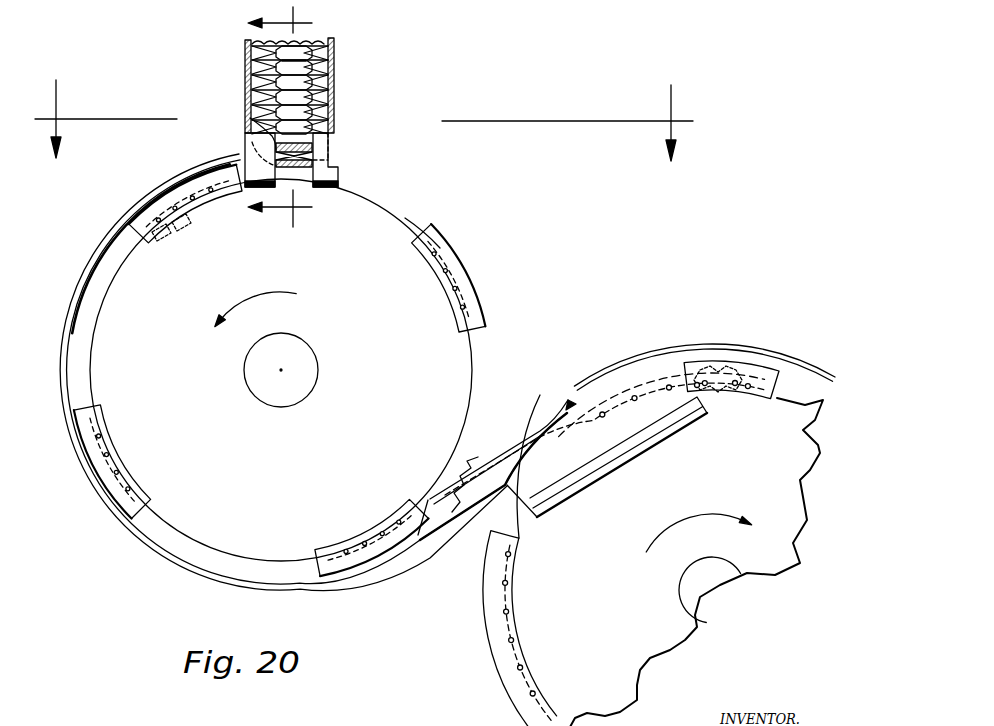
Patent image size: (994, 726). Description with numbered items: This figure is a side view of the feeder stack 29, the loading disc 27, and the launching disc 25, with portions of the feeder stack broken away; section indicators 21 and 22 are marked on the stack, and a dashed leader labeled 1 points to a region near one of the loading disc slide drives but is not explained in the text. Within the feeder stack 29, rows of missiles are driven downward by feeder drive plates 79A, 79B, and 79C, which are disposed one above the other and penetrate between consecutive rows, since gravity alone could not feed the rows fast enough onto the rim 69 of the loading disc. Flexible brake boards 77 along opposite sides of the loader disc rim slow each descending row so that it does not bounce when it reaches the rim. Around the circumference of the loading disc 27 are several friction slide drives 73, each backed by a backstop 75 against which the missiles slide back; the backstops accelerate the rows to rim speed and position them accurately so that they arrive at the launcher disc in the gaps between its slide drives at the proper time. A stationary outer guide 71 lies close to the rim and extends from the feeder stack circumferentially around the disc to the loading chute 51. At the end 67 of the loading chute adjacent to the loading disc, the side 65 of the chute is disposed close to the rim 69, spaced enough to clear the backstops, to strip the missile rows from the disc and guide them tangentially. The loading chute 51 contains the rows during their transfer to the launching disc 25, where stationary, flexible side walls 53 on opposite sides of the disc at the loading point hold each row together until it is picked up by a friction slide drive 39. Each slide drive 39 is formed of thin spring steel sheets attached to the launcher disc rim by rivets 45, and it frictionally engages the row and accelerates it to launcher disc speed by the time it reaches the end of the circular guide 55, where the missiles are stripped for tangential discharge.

The label 1 is at (128, 212).
The section line 21- 21 is at (367, 120).
The section line 22- 22 is at (290, 118).
The launching disc 25 is at (594, 594).
The loading disc 27 is at (386, 299).
The feeder stack 29 is at (336, 76).
The friction slide drive 39 is at (768, 382).
The rivets 45 is at (523, 682).
The loading chute 51 is at (518, 432).
The stationary side walls 53 is at (637, 448).
The circular guide 55 is at (694, 352).
The side of the loading chute 65 is at (457, 477).
The end of the loading chute 67 is at (425, 497).
The rim of the loading disc 69 is at (405, 218).
The stationary outer guide 71 is at (157, 552).
The friction slide drives 73 is at (455, 253).
The backstop 75 is at (487, 328).
The flexible brake boards 77 is at (339, 175).
The feeder drive plate 79A is at (247, 154).
The feeder drive plate 79B is at (318, 152).
The feeder drive plate 79C is at (250, 118).